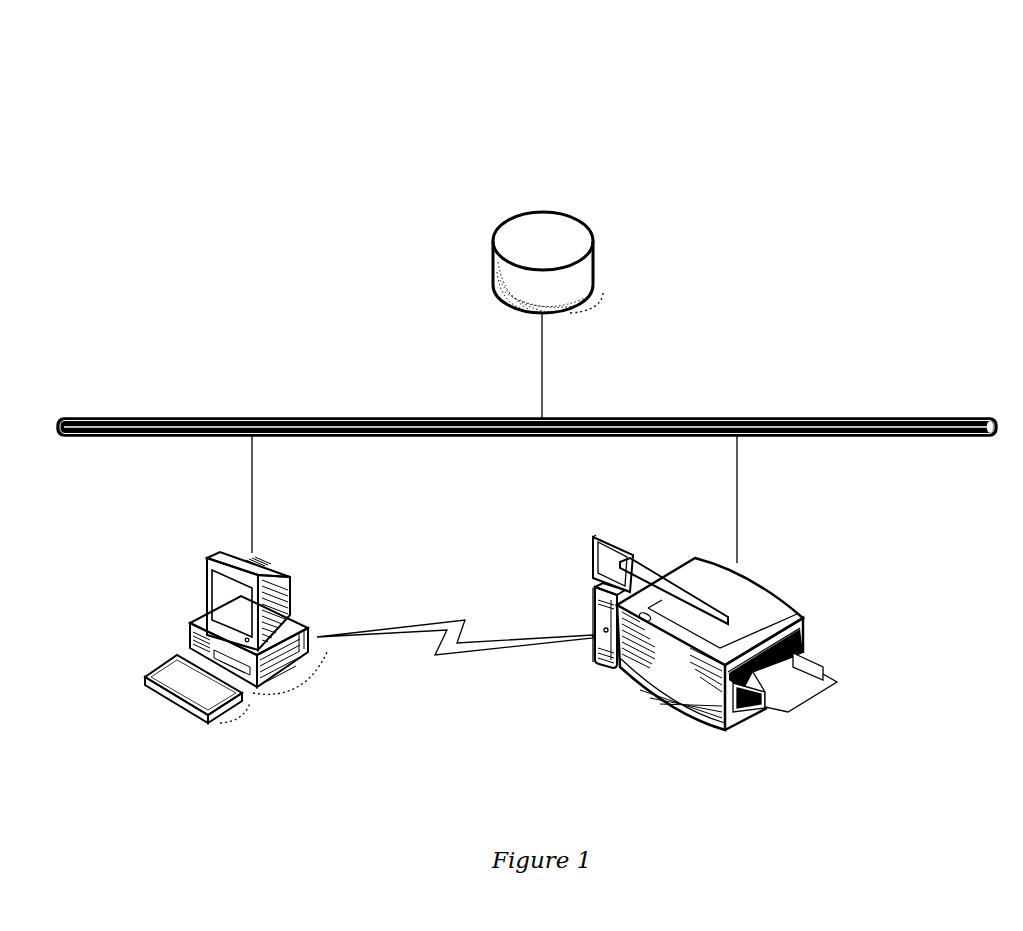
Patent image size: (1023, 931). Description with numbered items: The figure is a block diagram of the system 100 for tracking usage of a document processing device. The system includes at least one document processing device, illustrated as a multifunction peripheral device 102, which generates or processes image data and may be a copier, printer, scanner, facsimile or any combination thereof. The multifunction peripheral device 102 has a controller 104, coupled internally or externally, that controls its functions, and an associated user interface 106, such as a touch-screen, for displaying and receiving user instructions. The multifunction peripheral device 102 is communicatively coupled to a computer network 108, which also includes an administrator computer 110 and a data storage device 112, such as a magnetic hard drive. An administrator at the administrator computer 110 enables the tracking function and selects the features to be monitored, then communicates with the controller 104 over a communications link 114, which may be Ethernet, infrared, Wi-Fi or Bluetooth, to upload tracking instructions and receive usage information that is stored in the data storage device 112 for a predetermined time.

The system 100 is at (791, 62).
The multifunction peripheral device 102 is at (793, 609).
The controller 104 is at (595, 664).
The user interface 106 is at (613, 537).
The computer network 108 is at (445, 418).
The administrator computer 110 is at (278, 570).
The data storage device 112 is at (543, 213).
The communications link 114 is at (447, 620).